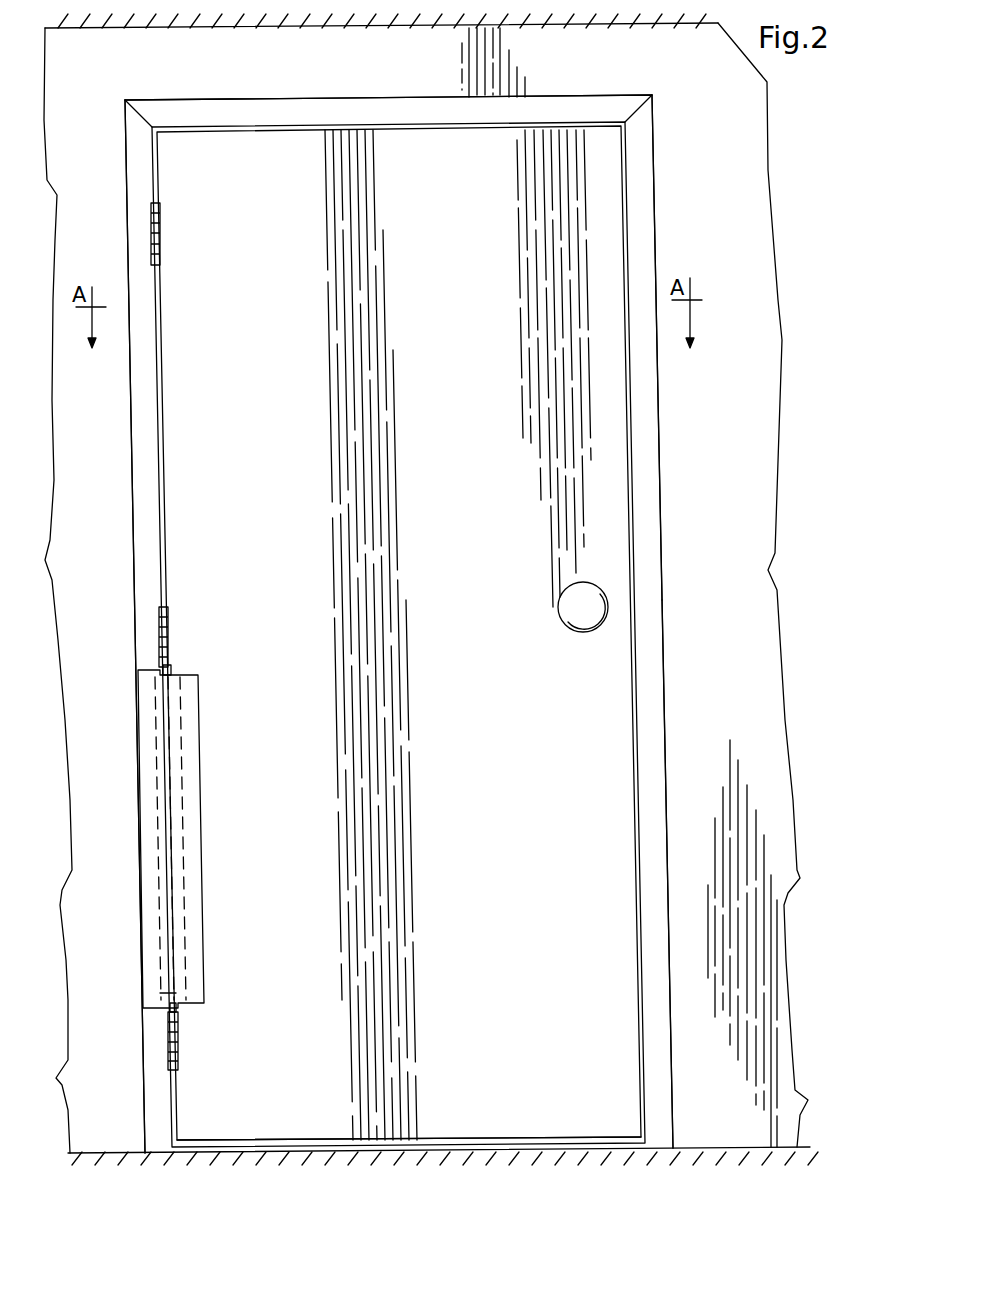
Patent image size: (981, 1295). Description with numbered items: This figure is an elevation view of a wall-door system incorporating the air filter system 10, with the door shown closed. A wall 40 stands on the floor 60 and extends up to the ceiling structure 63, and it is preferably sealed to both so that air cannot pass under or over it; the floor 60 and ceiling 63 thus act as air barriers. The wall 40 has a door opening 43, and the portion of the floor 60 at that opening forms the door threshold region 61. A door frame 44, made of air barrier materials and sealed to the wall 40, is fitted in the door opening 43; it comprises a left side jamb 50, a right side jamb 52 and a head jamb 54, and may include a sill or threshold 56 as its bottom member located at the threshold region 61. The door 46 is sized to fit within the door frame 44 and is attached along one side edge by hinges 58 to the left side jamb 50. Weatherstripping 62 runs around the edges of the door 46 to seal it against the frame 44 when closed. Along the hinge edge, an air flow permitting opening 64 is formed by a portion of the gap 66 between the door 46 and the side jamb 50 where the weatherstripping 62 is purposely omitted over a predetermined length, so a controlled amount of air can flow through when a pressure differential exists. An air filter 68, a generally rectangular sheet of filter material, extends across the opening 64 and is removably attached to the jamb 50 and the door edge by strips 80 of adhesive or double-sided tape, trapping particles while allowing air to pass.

The air filter system 10 is at (672, 125).
The wall 40 is at (96, 108).
The door opening 43 is at (294, 176).
The door frame 44 is at (667, 697).
The door 46 is at (585, 248).
The left side jamb 50 is at (134, 252).
The right side jamb 52 is at (660, 410).
The head jamb 54 is at (188, 100).
The sill or threshold 56 is at (388, 1147).
The hinges 58 is at (153, 227).
The floor 60 is at (718, 1146).
The door threshold region 61 is at (250, 1155).
The weatherstripping 62 is at (450, 123).
The ceiling structure 63 is at (168, 30).
The air flow permitting opening 64 is at (161, 766).
The gap 66 is at (171, 670).
The air filter 68 is at (168, 932).
The strips 80 is at (148, 812).